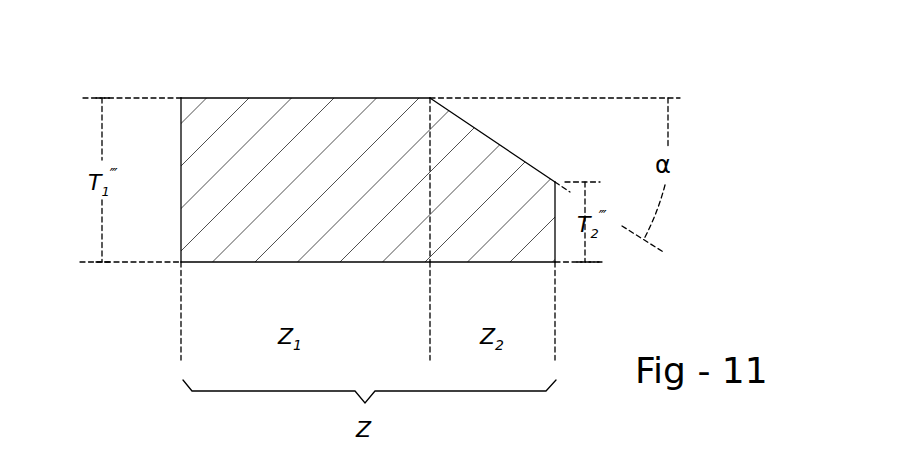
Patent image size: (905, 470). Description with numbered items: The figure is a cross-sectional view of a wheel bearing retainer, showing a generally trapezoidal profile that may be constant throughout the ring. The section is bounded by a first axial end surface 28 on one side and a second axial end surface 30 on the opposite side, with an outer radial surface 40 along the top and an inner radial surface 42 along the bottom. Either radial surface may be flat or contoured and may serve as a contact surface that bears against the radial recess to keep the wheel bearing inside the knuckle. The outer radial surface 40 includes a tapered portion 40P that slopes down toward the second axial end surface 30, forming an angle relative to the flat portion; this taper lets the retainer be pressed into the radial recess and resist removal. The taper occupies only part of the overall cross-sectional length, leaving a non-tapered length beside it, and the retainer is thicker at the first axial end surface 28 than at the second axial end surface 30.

The first axial end surface 28 is at (181, 135).
The outer radial surface 40 is at (314, 98).
The tapered portion 40P is at (518, 156).
The second axial end surface 30 is at (555, 245).
The inner radial surface 42 is at (222, 262).